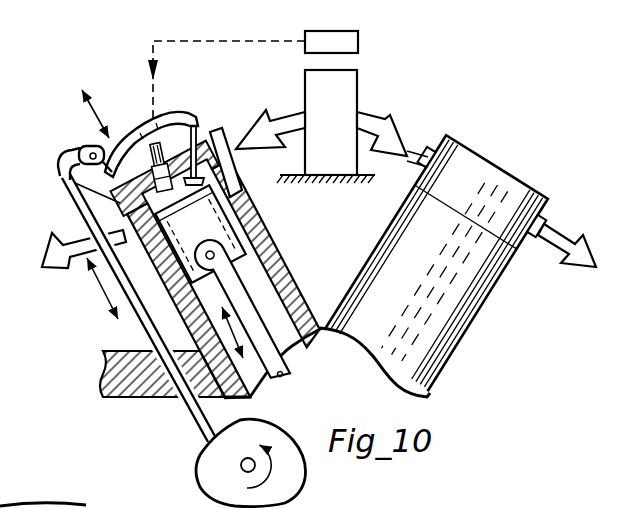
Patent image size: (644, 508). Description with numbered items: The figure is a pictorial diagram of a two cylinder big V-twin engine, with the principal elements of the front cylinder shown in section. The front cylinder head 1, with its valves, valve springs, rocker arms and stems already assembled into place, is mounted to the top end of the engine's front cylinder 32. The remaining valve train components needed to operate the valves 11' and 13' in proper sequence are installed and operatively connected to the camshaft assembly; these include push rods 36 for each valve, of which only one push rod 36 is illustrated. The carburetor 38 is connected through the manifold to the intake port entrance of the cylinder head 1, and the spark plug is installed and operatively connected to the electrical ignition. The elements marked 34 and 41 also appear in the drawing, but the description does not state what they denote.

The engine 1 is at (236, 126).
The handle lever 11' is at (75, 178).
The valve 13' is at (205, 134).
The drum 32 is at (358, 278).
The cover plate 34 is at (115, 142).
The actuating rod 36 is at (138, 322).
The control unit 38 is at (344, 125).
The controller 41 is at (358, 44).